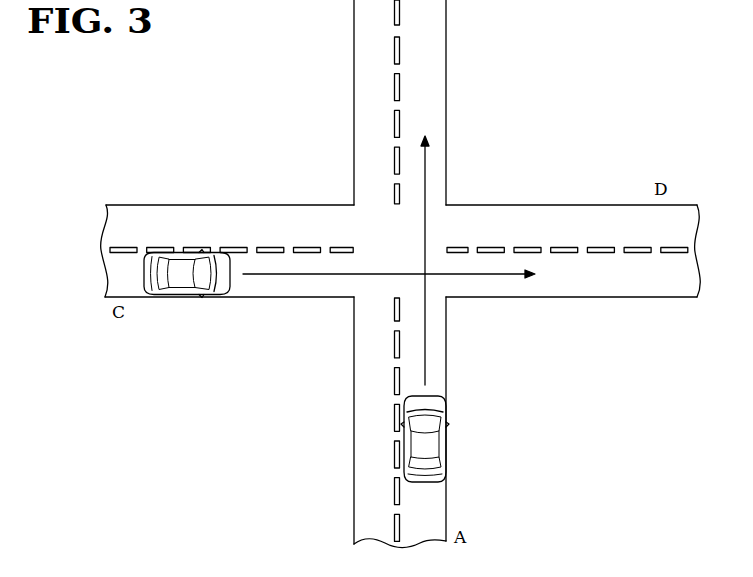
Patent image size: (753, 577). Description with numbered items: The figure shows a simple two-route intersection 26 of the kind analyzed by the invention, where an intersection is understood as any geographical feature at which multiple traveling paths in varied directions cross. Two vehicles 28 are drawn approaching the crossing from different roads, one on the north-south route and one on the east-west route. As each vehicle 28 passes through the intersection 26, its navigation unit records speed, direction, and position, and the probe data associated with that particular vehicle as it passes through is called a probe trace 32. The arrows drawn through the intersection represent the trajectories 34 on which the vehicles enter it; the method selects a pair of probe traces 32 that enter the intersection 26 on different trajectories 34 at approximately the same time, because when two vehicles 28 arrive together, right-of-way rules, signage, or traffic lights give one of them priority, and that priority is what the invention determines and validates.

The intersection 26 is at (489, 307).
The vehicle 28 is at (425, 484).
The probe trace 32 is at (425, 340).
The trajectory 34 is at (530, 268).